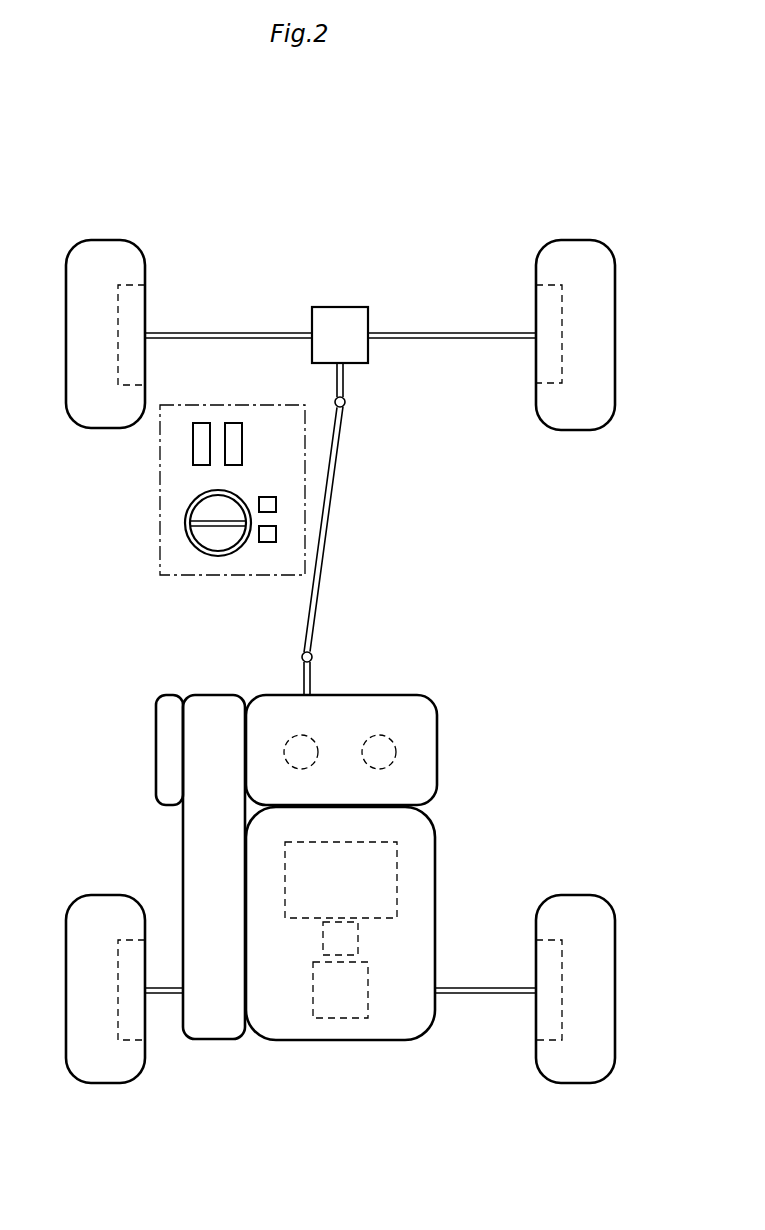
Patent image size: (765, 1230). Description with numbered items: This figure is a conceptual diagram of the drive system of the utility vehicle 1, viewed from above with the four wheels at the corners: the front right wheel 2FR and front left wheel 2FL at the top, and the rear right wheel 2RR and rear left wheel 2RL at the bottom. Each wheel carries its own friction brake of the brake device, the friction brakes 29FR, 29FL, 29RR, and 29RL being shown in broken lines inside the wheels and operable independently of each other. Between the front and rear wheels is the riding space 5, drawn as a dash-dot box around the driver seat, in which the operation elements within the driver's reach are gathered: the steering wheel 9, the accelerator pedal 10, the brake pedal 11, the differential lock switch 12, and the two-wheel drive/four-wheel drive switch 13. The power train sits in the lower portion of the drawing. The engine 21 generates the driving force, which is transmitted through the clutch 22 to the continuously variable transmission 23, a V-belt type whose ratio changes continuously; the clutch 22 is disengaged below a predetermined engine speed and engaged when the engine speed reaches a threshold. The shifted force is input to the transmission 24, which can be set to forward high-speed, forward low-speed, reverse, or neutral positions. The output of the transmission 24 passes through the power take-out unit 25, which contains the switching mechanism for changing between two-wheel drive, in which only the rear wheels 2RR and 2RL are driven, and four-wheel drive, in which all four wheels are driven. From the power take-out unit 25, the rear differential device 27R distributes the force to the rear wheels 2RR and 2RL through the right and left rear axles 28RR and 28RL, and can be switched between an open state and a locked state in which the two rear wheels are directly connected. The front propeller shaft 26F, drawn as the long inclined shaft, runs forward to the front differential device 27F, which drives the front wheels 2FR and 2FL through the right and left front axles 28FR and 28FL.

The utility vehicle 1 is at (601, 152).
The front left wheel 2FL is at (102, 252).
The front right wheel 2FR is at (580, 253).
The rear left wheel 2RL is at (100, 1077).
The rear right wheel 2RR is at (575, 1077).
The friction brake 29FL is at (130, 285).
The friction brake 29FR is at (548, 285).
The friction brake 29RL is at (125, 1043).
The friction brake 29RR is at (552, 1045).
The front axle 28FL is at (209, 330).
The front axle 28FR is at (449, 330).
The rear axle 28RL is at (165, 995).
The rear axle 28RR is at (478, 995).
The front differential device 27F is at (342, 312).
The rear differential device 27R is at (343, 1018).
The front propeller shaft 26F is at (343, 434).
The riding space 5 is at (160, 556).
The steering wheel 9 is at (185, 520).
The accelerator pedal 10 is at (193, 437).
The brake pedal 11 is at (232, 423).
The differential lock switch 12 is at (277, 503).
The two-wheel drive/four-wheel drive switch 13 is at (277, 532).
The engine 21 is at (414, 707).
The clutch 22 is at (170, 707).
The continuously variable transmission 23 is at (217, 707).
The transmission 24 is at (398, 858).
The power take-out unit 25 is at (358, 945).